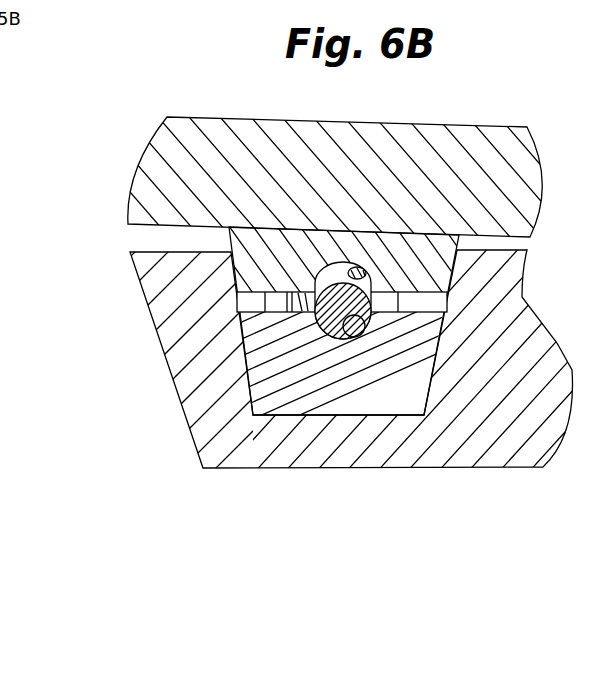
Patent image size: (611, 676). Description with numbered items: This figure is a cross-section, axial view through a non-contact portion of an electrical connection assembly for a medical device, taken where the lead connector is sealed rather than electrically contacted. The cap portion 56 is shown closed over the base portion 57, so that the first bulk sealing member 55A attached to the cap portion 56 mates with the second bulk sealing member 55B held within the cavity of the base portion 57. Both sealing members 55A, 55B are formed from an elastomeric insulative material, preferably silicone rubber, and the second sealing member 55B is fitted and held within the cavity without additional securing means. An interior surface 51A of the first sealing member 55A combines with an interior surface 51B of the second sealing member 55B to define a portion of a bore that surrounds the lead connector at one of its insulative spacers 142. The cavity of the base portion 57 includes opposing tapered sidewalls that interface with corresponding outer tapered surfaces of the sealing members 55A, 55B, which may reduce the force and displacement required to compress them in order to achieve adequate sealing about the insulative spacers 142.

The cap portion 56 is at (343, 127).
The base portion 57 is at (520, 455).
The insulative spacer 142 is at (253, 417).
The first bulk sealing member 55A is at (247, 263).
The second bulk sealing member 55B is at (240, 343).
The interior surface of first sealing member 51A is at (372, 280).
The interior surface of second sealing member 51B is at (360, 334).